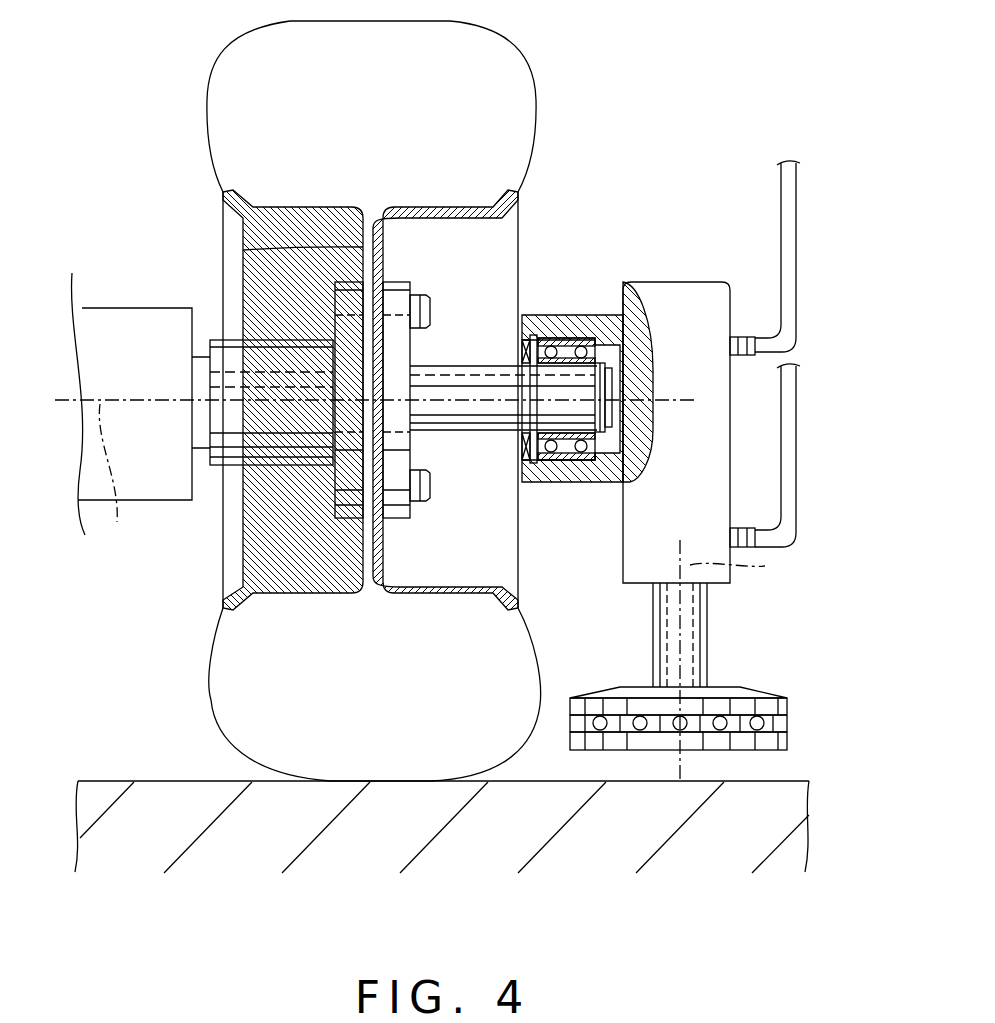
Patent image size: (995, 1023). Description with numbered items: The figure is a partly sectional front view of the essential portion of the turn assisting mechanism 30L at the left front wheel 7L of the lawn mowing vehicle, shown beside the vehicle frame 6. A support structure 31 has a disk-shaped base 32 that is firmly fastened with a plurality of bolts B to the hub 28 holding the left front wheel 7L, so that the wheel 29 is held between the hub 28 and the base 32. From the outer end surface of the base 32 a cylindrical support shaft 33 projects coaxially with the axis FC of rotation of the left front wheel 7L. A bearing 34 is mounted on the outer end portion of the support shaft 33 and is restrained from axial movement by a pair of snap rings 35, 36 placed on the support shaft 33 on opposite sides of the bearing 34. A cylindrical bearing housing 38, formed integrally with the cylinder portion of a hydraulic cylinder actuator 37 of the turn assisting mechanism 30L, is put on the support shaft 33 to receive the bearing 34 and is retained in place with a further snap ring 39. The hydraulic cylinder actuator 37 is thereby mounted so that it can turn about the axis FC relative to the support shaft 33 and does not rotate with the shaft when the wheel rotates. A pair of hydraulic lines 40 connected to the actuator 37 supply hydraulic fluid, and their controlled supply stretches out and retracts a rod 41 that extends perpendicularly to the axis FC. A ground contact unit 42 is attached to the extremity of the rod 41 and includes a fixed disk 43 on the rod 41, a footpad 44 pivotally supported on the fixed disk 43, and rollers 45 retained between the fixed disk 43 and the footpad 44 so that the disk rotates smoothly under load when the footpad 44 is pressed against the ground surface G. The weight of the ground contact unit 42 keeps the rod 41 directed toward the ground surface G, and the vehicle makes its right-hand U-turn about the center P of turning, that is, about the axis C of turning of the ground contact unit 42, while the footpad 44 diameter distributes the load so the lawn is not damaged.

The left front wheel 7L is at (513, 72).
The vehicle frame 6 is at (125, 300).
The axis of rotation FC is at (120, 480).
The wheel 29 is at (247, 250).
The hub 28 is at (338, 495).
The bolts B is at (420, 306).
The support structure 31 is at (370, 442).
The disk-shaped base 32 is at (397, 515).
The cylindrical support shaft 33 is at (476, 427).
The turn assisting mechanism 30L is at (714, 461).
The snap ring 35 is at (533, 388).
The bearing 34 is at (566, 458).
The snap ring 36 is at (606, 362).
The hydraulic cylinder actuator 37 is at (680, 282).
The cylindrical bearing housing 38 is at (578, 316).
The snap ring 39 is at (536, 336).
The hydraulic lines 40 is at (790, 282).
The rod 41 is at (707, 628).
The ground contact unit 42 is at (738, 717).
The fixed disk 43 is at (778, 703).
The footpad 44 is at (712, 752).
The rollers 45 is at (764, 722).
The axis of turning C is at (743, 565).
The ground surface G is at (130, 780).
The center of turning P is at (680, 783).